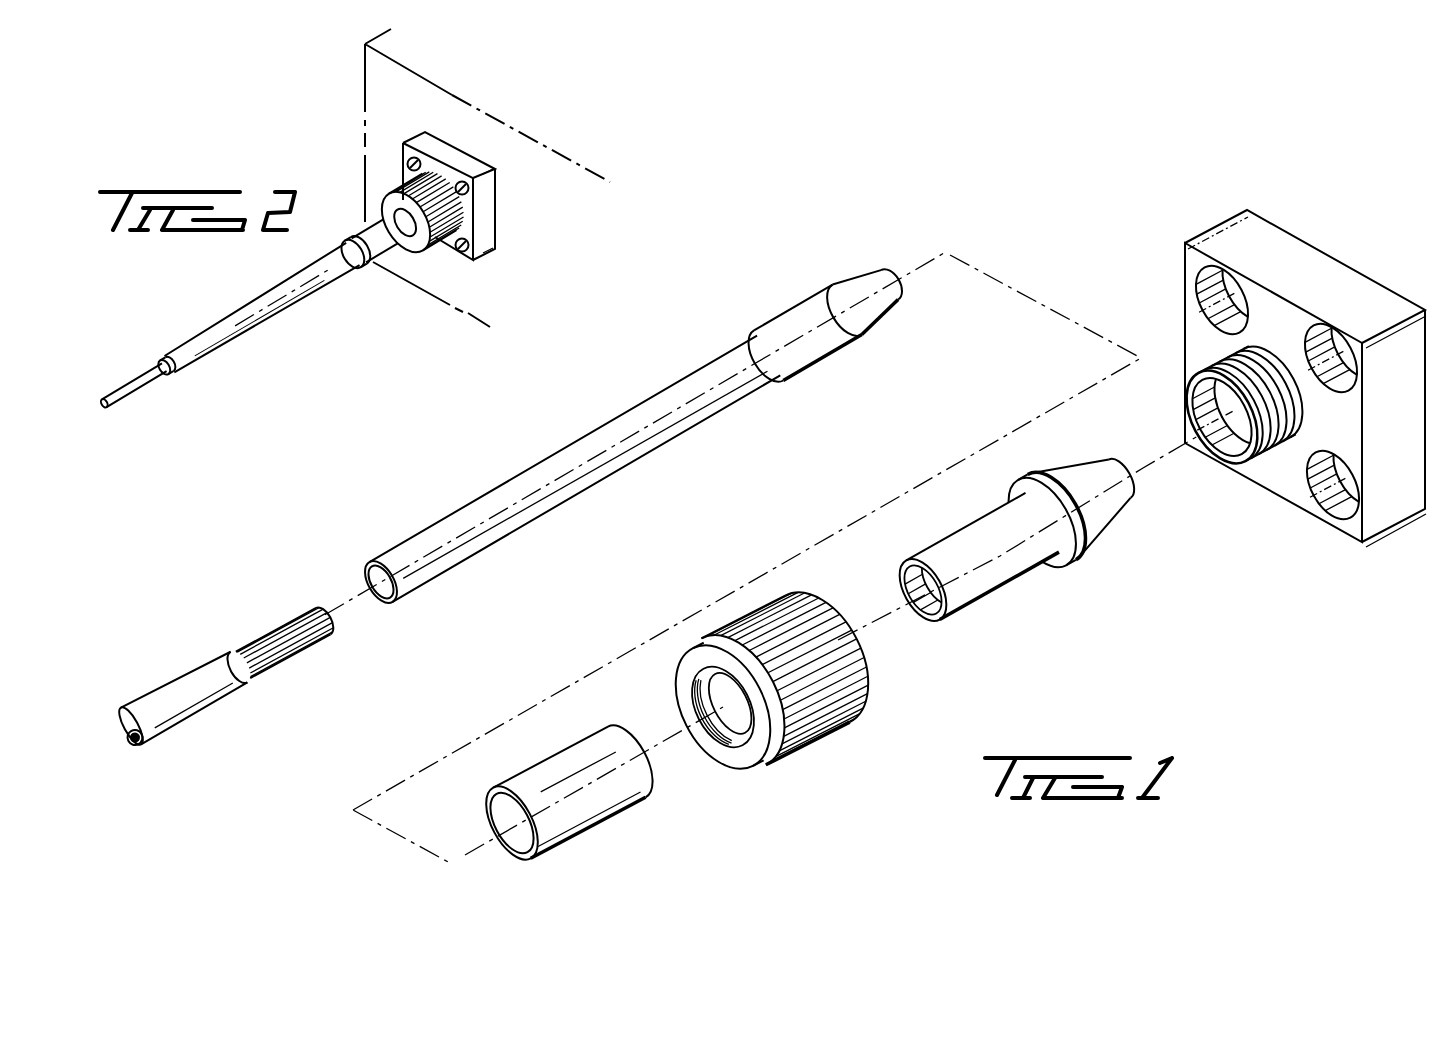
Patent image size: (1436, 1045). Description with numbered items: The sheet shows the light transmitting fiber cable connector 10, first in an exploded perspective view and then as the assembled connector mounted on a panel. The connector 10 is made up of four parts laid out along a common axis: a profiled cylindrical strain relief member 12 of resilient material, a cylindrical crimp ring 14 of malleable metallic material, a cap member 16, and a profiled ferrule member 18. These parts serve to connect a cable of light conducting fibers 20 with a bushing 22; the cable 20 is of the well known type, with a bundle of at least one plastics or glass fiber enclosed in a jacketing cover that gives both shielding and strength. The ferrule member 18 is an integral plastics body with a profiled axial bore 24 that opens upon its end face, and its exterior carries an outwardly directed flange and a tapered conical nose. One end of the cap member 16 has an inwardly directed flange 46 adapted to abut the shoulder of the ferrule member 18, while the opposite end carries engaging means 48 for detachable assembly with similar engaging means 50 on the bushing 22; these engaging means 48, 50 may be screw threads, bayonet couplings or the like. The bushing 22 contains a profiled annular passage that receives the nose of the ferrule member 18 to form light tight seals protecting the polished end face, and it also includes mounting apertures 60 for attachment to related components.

In FIG. 2, the light transmitting fiber cable connector 10 is at (432, 256).
In FIG. 1, the strain relief member 12 is at (482, 498).
In FIG. 1, the crimp ring 14 is at (603, 807).
In FIG. 1, the cap member 16 is at (812, 738).
In FIG. 1, the ferrule member 18 is at (1007, 585).
In FIG. 1, the light transmitting fiber cable 20 is at (213, 670).
In FIG. 1, the bushing 22 is at (1278, 482).
In FIG. 1, the axial bore 24 is at (925, 602).
In FIG. 1, the inwardly directed flange 46 is at (700, 700).
In FIG. 1, the engaging means 48 is at (720, 687).
In FIG. 1, the engaging means 50 is at (1203, 366).
In FIG. 1, the mounting apertures 60 is at (1335, 508).